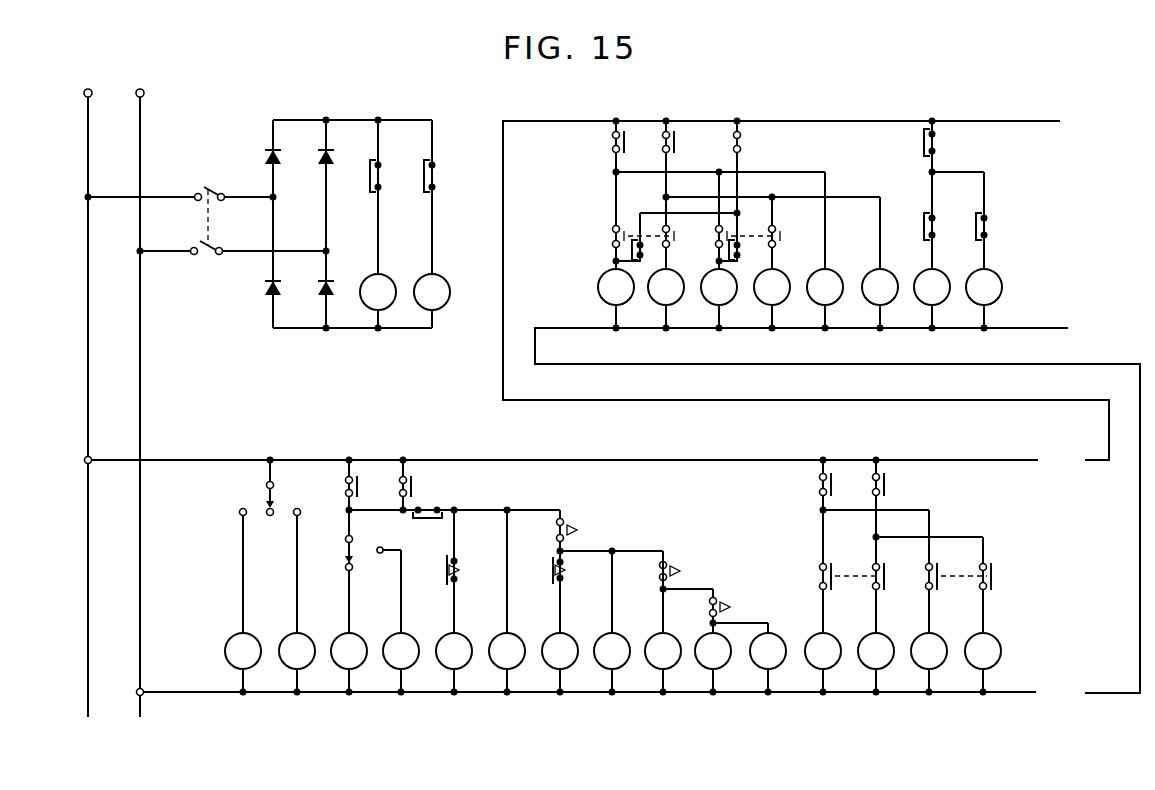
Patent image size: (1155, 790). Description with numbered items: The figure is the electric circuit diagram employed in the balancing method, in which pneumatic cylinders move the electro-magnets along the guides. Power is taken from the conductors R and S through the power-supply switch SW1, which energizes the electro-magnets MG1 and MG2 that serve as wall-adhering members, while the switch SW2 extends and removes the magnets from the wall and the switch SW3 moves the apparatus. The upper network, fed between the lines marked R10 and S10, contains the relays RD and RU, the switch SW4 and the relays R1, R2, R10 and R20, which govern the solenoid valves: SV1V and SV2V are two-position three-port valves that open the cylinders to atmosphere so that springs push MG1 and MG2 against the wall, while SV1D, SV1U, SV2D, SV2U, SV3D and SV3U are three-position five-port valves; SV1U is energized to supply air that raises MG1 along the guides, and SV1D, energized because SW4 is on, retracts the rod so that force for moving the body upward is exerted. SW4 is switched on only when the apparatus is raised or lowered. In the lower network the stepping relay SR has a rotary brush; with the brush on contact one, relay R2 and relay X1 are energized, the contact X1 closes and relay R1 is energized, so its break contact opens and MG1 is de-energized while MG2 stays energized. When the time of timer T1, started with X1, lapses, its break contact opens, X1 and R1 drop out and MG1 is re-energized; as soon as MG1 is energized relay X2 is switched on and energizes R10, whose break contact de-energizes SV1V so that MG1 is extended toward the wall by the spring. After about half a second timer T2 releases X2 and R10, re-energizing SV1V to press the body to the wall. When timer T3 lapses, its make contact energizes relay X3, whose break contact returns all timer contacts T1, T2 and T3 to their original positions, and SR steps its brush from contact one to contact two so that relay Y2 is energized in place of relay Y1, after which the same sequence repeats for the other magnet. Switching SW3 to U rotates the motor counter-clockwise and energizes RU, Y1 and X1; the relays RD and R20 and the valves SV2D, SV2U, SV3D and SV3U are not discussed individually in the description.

The supply line R is at (87, 394).
The supply line S is at (140, 394).
The power-supply switch SW1 is at (207, 208).
The relay R1 is at (605, 426).
The relay R2 is at (685, 426).
The electro-magnet MG1 is at (378, 224).
The electro-magnet MG2 is at (432, 224).
The relay R10 is at (597, 394).
The S10 bus S10 is at (639, 505).
The relay RD / contacts RD is at (436, 407).
The relay RU is at (488, 407).
The switch SW4 is at (755, 167).
The switch SW2 is at (940, 143).
The relay R20 / contacts R20 is at (993, 432).
The three-position five-port solenoid valve SV1D is at (616, 300).
The three-position five-port solenoid valve SV1U is at (666, 300).
The solenoid valve SV2D is at (719, 300).
The solenoid valve SV2U is at (772, 300).
The solenoid valve SV3D is at (825, 300).
The solenoid valve SV3U is at (880, 300).
The two-position three-port solenoid valve SV1V is at (932, 300).
The two-position three-port solenoid valve SV2V is at (984, 300).
The switch SW3 is at (275, 495).
The relay X3 is at (599, 592).
The stepping relay SR is at (548, 612).
The relay Y1 is at (619, 632).
The relay Y2 is at (698, 623).
The relay X1 is at (645, 576).
The relay X2 is at (724, 576).
The timer T1 is at (522, 603).
The timer T2 is at (626, 623).
The timer T3 is at (663, 623).